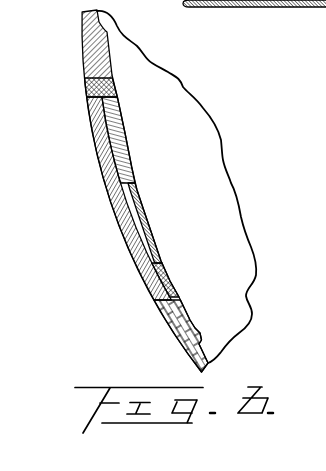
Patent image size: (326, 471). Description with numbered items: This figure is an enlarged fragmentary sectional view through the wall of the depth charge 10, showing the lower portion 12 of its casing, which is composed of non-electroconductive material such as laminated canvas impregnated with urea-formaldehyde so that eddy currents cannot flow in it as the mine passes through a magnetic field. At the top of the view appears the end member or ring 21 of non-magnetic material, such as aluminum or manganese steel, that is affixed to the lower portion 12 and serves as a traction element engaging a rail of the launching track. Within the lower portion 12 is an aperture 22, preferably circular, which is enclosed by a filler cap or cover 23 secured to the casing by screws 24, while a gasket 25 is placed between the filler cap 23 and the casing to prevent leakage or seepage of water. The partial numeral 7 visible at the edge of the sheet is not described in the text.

The depth charge 10 is at (83, 30).
The lower portion of the casing 12 is at (121, 36).
The end member or ring 21 is at (261, 5).
The aperture 22 is at (148, 237).
The filler cap or cover 23 is at (134, 254).
The screws 24 is at (88, 98).
The gasket 25 is at (155, 263).
The partial numeral 7 is at (323, 96).